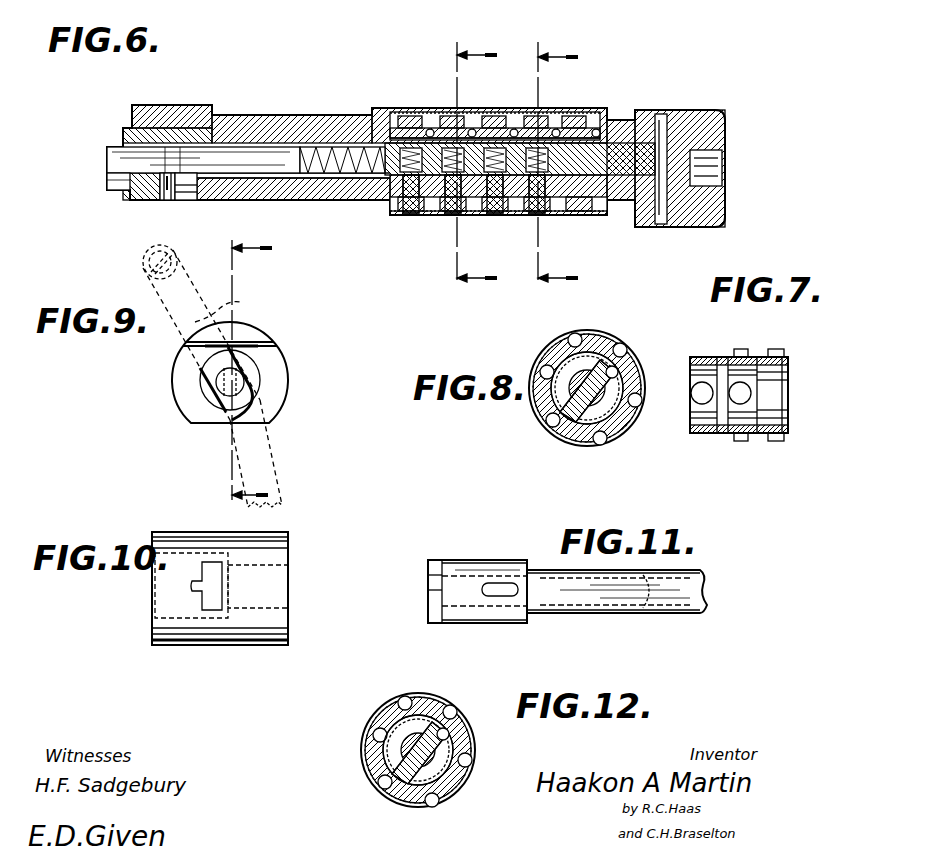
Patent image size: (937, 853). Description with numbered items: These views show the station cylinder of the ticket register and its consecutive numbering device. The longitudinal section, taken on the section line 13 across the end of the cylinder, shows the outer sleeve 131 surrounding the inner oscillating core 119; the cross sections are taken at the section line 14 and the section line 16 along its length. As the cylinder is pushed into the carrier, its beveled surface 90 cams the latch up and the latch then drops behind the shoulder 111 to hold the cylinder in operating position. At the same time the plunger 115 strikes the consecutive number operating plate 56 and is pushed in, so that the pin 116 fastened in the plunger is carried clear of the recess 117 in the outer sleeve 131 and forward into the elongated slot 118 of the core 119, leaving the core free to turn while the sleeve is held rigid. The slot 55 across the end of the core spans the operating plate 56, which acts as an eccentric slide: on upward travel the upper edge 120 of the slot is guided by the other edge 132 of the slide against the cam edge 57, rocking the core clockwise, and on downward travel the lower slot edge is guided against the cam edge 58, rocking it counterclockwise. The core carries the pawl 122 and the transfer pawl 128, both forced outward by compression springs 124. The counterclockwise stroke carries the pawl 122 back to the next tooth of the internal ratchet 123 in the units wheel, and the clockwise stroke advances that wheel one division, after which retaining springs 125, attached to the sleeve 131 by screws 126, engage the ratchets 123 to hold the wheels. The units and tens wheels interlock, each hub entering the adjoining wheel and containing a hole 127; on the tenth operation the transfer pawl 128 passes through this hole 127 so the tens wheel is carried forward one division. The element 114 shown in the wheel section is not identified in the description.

In FIG. 6, the beveled surface 90 is at (147, 106).
In FIG. 6, the shoulder 111 is at (224, 110).
In FIG. 6, the outer sleeve 131 is at (283, 118).
In FIG. 10, the outer sleeve 131 is at (242, 646).
In FIG. 6, the inner oscillating core 119 is at (350, 142).
In FIG. 11, the inner oscillating core 119 is at (576, 616).
In FIG. 6, the screws 126 is at (396, 135).
In FIG. 7, the screws 126 is at (720, 358).
In FIG. 6, the compression springs 124 is at (545, 133).
In FIG. 8, the compression springs 124 is at (614, 368).
In FIG. 12, the compression springs 124 is at (428, 730).
In FIG. 6, the plunger 115 is at (107, 152).
In FIG. 9, the plunger 115 is at (218, 392).
In FIG. 6, the slot 55 is at (107, 182).
In FIG. 6, the pin 116 is at (167, 200).
In FIG. 6, the transfer pawl 128 is at (470, 212).
In FIG. 12, the transfer pawl 128 is at (400, 772).
In FIG. 6, the pawl 122 is at (545, 215).
In FIG. 8, the pawl 122 is at (565, 418).
In FIG. 6, the section line 16— 16 is at (470, 160).
In FIG. 6, the section line 14— 14 is at (552, 160).
In FIG. 9, the section line 13— 13 is at (246, 373).
In FIG. 9, the upper edge of the slot 120 is at (250, 385).
In FIG. 9, the edge of the slide 132 is at (170, 340).
In FIG. 9, the cam edge 57 is at (185, 298).
In FIG. 9, the cam edge 58 is at (225, 306).
In FIG. 9, the consecutive number operating plate 56 is at (272, 466).
In FIG. 8, the retaining springs 125 is at (548, 360).
In FIG. 12, the retaining springs 125 is at (372, 752).
In FIG. 8, the internal ratchet 123 is at (590, 420).
In FIG. 12, the internal ratchet 123 is at (465, 780).
In FIG. 7, the hole 127 is at (720, 432).
In FIG. 7, the ring 114 is at (765, 441).
In FIG. 10, the recess 117 is at (195, 588).
In FIG. 11, the elongated slot 118 is at (486, 596).